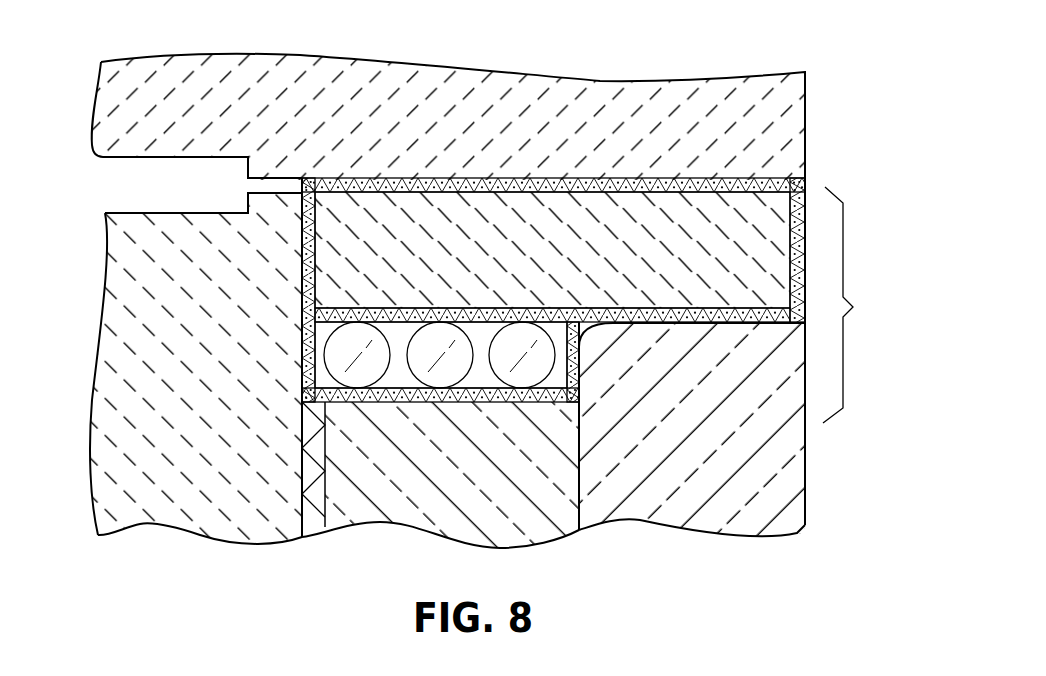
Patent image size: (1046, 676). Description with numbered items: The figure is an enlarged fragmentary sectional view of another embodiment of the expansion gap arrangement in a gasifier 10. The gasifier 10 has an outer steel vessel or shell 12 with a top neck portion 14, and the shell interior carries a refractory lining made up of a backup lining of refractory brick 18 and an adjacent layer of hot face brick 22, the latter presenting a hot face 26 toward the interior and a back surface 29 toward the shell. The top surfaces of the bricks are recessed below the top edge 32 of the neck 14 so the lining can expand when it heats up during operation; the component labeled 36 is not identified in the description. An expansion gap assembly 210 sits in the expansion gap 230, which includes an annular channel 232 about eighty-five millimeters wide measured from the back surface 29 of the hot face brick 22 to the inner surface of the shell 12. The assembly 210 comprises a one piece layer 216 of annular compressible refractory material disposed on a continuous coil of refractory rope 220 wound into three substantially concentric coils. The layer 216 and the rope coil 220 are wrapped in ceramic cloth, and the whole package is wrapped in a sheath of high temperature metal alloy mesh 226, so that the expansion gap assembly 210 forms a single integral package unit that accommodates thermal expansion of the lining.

The gasifier 10 is at (468, 327).
The outer steel vessel or shell 12 is at (182, 379).
The top neck portion 14 is at (136, 528).
The backup lining of refractory brick 18 is at (387, 532).
The hot face brick 22 is at (710, 385).
The hot face 26 is at (805, 477).
The back surface of the hot face brick 29 is at (578, 512).
The top edge of the gasifier neck 32 is at (250, 188).
The upper body 36 is at (807, 112).
The expansion gap assembly 210 is at (602, 307).
The one piece layer of annular compressible refractory material 216 is at (437, 210).
The continuous coil of refractory rope 220 is at (513, 338).
The sheath of high temperature metal alloy mesh 226 is at (655, 178).
The expansion gap 230 is at (863, 305).
The annular channel 232 is at (378, 380).